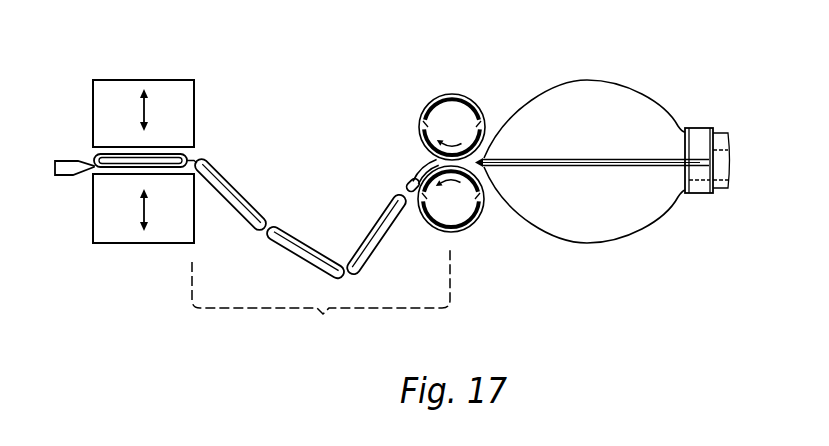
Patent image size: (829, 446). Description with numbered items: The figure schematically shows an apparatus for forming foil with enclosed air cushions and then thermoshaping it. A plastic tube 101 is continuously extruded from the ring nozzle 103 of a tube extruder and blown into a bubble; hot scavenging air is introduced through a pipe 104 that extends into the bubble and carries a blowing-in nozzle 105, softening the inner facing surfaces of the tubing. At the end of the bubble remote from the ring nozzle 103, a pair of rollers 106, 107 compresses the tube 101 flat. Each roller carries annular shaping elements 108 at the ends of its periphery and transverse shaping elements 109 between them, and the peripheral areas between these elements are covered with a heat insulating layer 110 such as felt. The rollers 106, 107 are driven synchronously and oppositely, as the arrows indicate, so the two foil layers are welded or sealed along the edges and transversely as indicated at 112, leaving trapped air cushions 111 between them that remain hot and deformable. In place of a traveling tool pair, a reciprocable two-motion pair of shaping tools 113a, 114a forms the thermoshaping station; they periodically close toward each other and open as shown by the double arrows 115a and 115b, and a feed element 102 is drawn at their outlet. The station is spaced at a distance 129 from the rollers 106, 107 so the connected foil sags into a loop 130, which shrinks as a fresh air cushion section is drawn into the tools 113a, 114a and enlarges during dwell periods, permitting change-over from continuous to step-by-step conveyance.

The plastic tube 101 is at (605, 80).
The feed guide 102 is at (67, 165).
The ring nozzle 103 is at (697, 138).
The pipe 104 is at (612, 167).
The blowing-in nozzle 105 is at (484, 161).
The roller 106 is at (456, 108).
The roller 107 is at (460, 212).
The annular shaping elements 108 is at (432, 95).
The transverse shaping elements 109 is at (420, 123).
The heat insulating layer 110 is at (477, 100).
The air cushions 111 is at (230, 197).
The weld or seal 112 is at (192, 160).
The shaping tool 113a is at (173, 93).
The shaping tool 114a is at (173, 238).
The double arrow 115a is at (143, 104).
The double arrow 115b is at (143, 204).
The distance 129 is at (321, 293).
The loop 130 is at (300, 232).